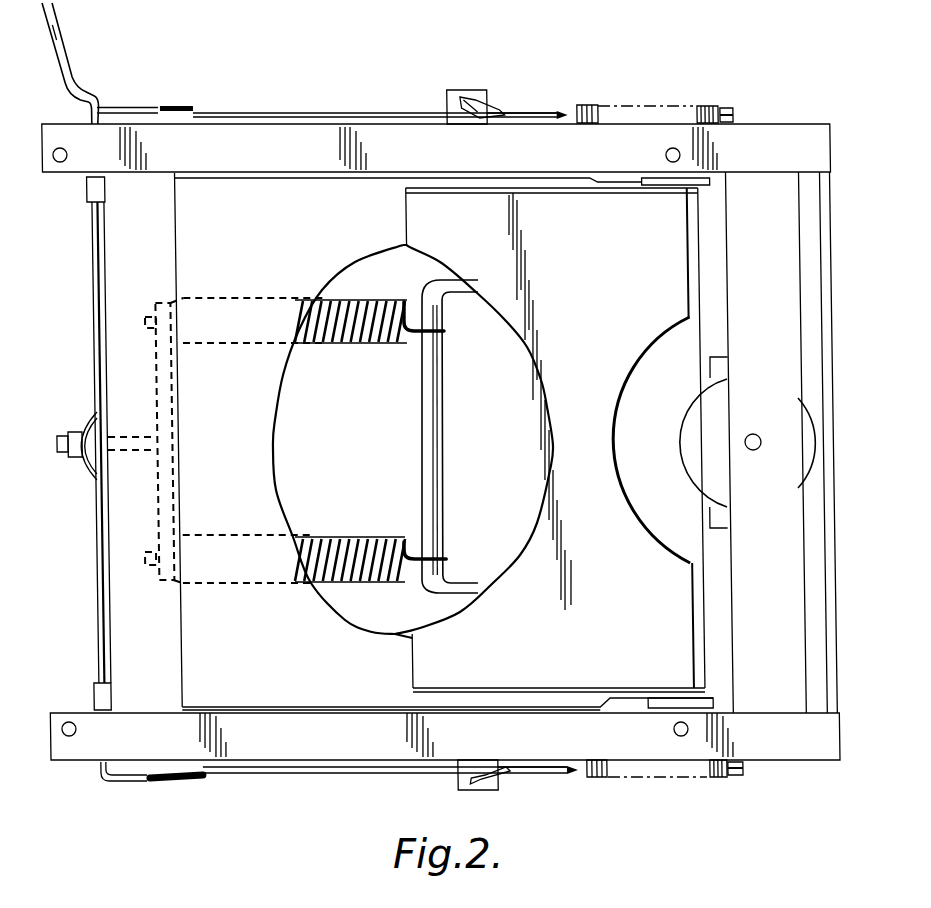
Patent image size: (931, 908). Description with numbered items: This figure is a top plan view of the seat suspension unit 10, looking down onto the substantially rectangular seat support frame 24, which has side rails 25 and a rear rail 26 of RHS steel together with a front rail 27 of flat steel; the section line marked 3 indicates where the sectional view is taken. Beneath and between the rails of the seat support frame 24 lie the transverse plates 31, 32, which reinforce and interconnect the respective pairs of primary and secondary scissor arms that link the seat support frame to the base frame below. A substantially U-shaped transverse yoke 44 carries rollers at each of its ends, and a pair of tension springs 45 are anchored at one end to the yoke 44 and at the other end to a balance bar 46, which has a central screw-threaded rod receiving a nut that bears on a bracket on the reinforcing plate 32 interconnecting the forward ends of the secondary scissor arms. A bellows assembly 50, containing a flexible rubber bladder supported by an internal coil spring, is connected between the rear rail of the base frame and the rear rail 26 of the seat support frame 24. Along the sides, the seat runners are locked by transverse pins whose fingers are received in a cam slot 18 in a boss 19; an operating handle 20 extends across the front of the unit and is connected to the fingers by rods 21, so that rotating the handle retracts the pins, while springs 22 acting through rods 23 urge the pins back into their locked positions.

The seat suspension unit 10 is at (634, 93).
The cam slot 18 is at (459, 92).
The boss 19 is at (474, 89).
The operating handle 20 is at (67, 72).
The rods 21 is at (346, 112).
The springs 22 is at (708, 105).
The rods 23 is at (538, 108).
The seat support frame 24 is at (791, 122).
The side rails 25 is at (251, 133).
The rear rail 26 is at (772, 238).
The front rail 27 is at (146, 238).
The transverse plate 31 is at (271, 238).
The transverse plate 32 is at (569, 238).
The transverse yoke 44 is at (426, 420).
The tension springs 45 is at (365, 345).
The balance bar 46 is at (157, 408).
The bellows assembly 50 is at (676, 406).
The section line 3- 3 is at (82, 518).